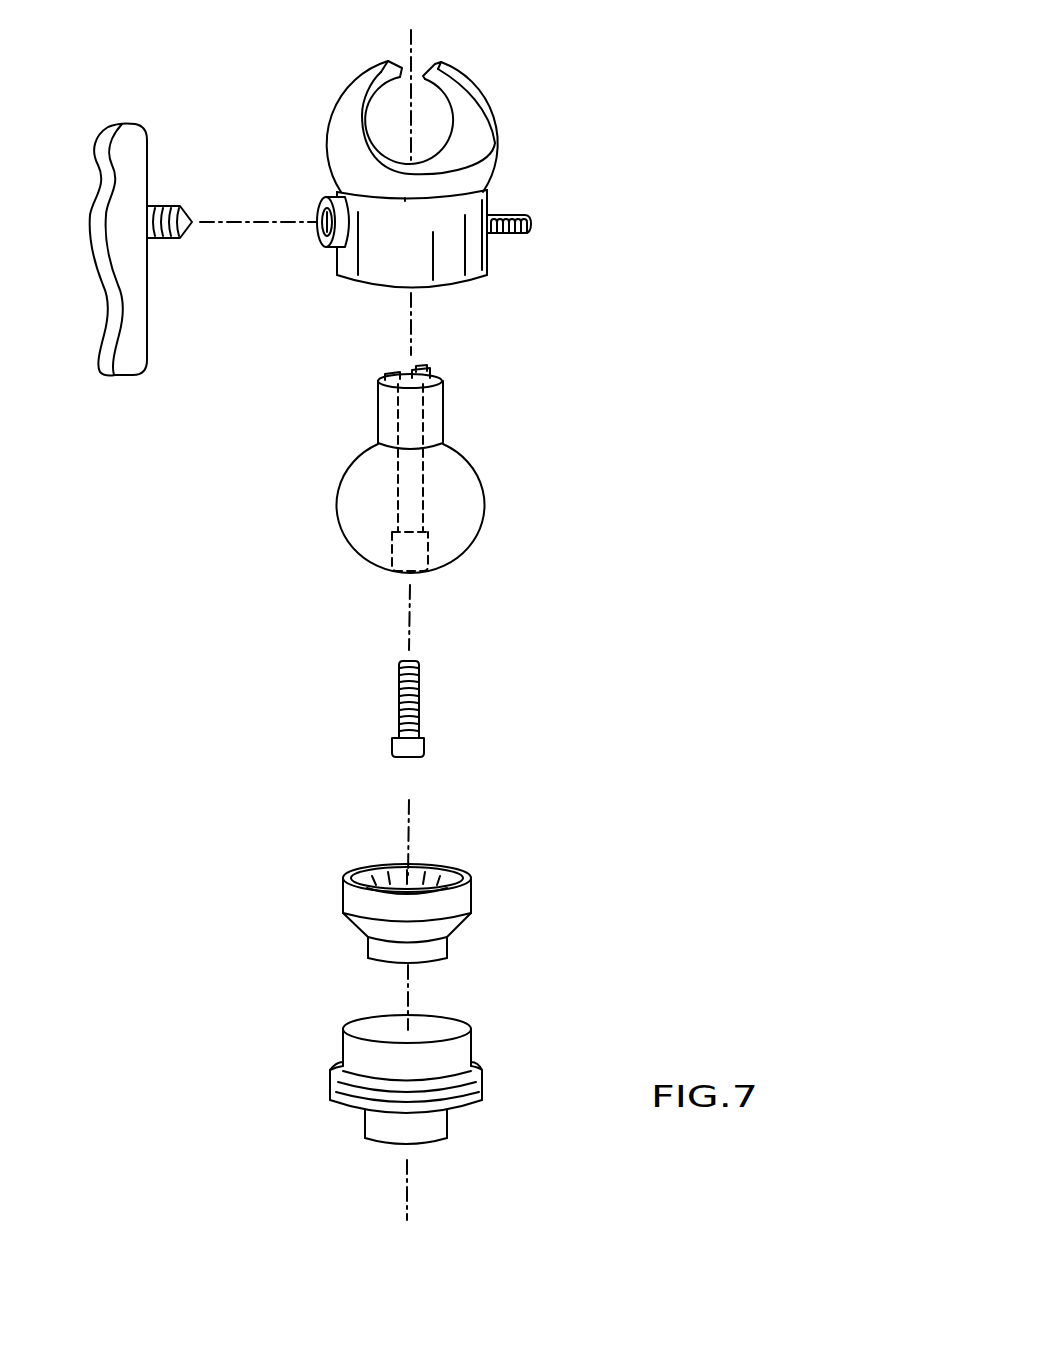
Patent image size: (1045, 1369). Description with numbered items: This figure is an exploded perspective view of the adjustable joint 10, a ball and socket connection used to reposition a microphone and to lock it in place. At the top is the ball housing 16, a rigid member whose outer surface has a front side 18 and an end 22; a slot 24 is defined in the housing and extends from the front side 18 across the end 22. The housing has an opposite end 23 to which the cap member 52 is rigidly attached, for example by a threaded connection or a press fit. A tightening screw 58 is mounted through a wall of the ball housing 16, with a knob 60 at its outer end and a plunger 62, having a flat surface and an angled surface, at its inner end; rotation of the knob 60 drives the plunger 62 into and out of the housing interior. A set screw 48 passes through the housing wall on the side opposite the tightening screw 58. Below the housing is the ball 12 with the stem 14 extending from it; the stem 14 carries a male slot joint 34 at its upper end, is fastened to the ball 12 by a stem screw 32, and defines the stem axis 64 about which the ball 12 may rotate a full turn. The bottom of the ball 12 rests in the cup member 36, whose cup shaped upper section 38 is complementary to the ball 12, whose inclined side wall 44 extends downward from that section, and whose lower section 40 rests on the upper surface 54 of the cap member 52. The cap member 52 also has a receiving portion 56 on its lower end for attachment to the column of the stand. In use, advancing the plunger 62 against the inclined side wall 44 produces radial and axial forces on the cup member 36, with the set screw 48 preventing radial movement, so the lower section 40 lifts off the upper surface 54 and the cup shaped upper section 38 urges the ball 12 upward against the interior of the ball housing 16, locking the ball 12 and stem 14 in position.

The adjustable joint 10 is at (656, 104).
The ball 12 is at (468, 507).
The stem 14 is at (385, 420).
The ball housing 16 is at (330, 112).
The front side 18 is at (462, 253).
The end 22 is at (387, 63).
The end 23 is at (471, 296).
The slot 24 is at (466, 139).
The stem screw 32 is at (412, 697).
The male slot joint 34 is at (432, 372).
The cup member 36 is at (467, 897).
The cup shaped upper section 38 is at (450, 865).
The lower section 40 is at (435, 948).
The inclined side wall 44 is at (358, 929).
The set screw 48 is at (529, 221).
The cap member 52 is at (473, 1087).
The upper surface 54 is at (343, 1027).
The receiving portion 56 is at (427, 1145).
The tightening screw 58 is at (168, 207).
The knob 60 is at (133, 293).
The plunger 62 is at (193, 218).
The stem axis 64 is at (418, 50).